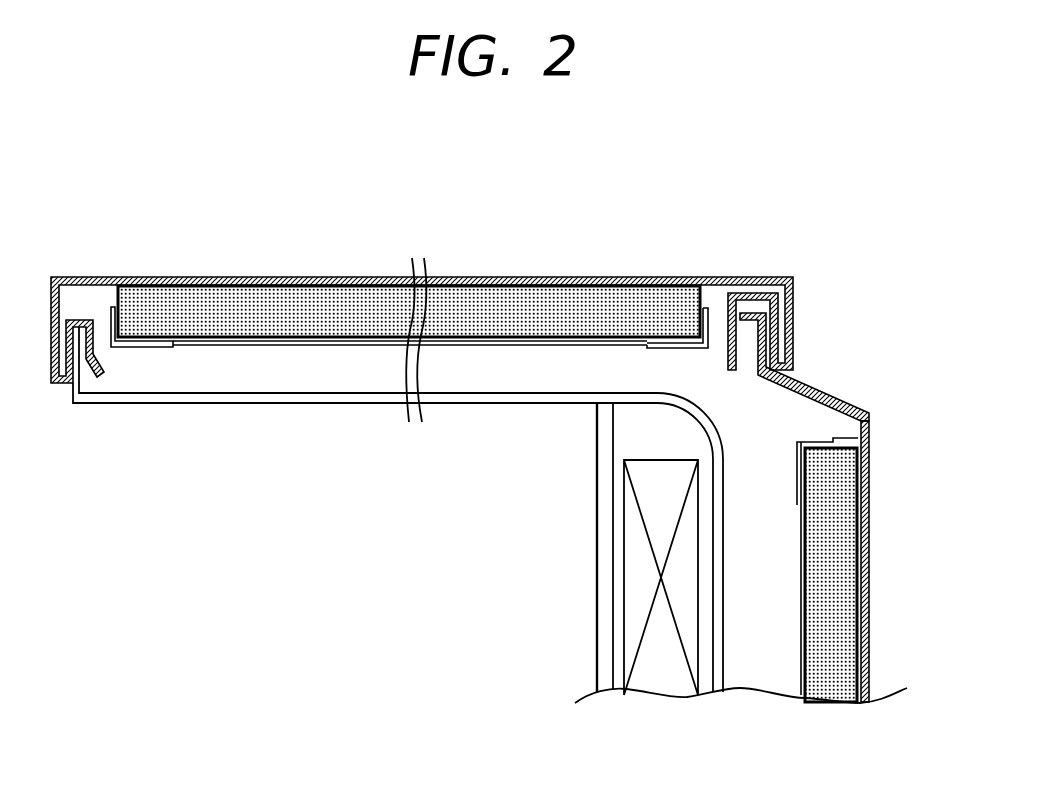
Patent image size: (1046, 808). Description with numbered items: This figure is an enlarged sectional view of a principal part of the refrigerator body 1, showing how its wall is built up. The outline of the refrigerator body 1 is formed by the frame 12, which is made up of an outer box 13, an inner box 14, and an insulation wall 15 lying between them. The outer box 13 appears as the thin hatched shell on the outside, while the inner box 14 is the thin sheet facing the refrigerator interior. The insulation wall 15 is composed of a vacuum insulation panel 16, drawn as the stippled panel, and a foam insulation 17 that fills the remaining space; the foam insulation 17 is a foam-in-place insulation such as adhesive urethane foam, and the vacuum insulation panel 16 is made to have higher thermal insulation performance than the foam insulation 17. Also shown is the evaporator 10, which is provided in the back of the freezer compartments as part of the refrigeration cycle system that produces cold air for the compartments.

The refrigerator body 1 is at (869, 581).
The evaporator 10 is at (658, 670).
The frame 12 is at (567, 276).
The outer box 13 is at (118, 277).
The inner box 14 is at (352, 403).
The insulation wall 15 is at (767, 421).
The vacuum insulation panel 16 is at (362, 300).
The foam insulation 17 is at (495, 372).